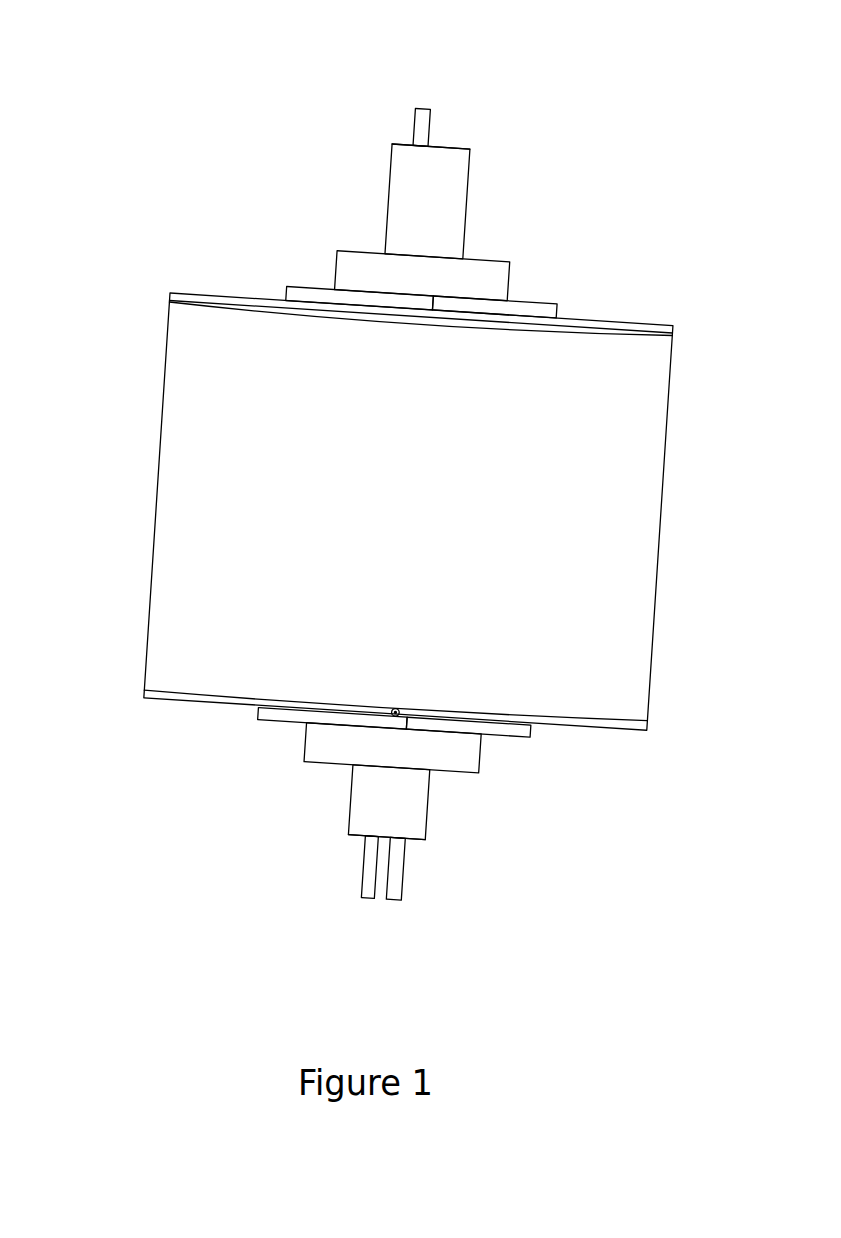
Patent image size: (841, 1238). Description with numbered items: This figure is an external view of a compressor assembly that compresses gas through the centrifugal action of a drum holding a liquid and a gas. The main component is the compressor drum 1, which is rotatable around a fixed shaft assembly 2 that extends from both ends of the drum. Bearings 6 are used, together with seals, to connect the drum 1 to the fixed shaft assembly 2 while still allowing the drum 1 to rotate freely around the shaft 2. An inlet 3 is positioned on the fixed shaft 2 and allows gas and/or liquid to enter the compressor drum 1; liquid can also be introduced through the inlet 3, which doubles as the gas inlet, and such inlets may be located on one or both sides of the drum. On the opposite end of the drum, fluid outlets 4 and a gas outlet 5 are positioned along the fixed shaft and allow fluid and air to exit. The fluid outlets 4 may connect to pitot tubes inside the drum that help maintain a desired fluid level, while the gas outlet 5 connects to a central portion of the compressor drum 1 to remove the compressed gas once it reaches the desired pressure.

The compressor drum 1 is at (157, 495).
The fixed shaft assembly 2 is at (392, 196).
The inlet 3 is at (455, 145).
The fluid outlet 4 is at (368, 897).
The gas outlet 5 is at (418, 106).
The bearing 6 is at (510, 282).